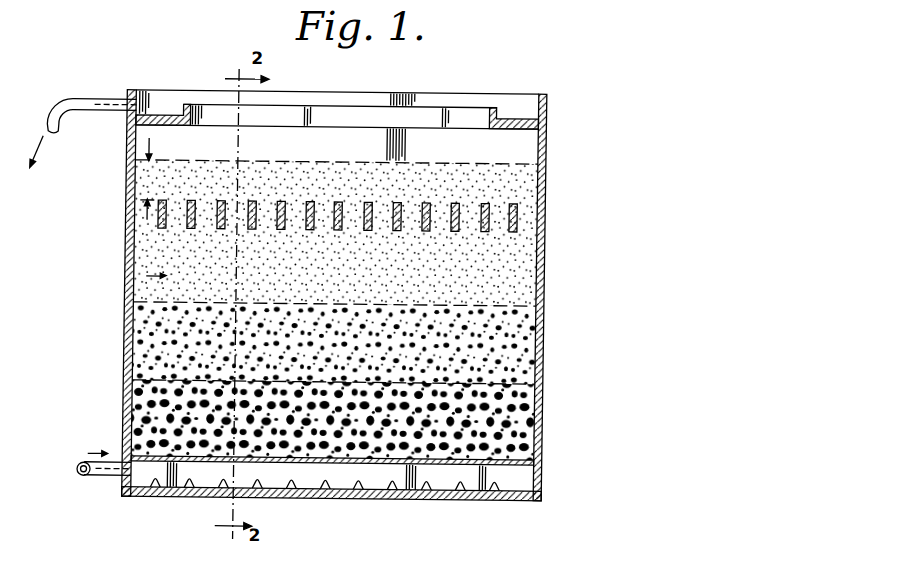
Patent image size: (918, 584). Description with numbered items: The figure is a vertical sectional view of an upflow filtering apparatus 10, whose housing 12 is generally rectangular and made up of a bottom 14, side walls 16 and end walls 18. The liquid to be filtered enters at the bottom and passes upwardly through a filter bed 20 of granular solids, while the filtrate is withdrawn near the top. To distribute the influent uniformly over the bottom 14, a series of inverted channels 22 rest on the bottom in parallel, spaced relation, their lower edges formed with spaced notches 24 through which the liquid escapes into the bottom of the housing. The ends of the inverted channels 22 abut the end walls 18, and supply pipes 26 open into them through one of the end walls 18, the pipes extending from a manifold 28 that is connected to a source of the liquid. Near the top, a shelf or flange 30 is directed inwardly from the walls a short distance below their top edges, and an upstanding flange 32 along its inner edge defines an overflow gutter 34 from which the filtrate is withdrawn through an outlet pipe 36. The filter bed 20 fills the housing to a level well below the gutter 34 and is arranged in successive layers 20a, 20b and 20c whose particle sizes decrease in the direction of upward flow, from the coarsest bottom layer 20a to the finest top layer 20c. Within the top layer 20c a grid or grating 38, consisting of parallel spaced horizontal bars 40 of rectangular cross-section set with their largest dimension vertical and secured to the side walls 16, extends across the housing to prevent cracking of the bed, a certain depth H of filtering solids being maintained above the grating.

The filtering apparatus 10 is at (551, 84).
The housing 12 is at (555, 192).
The bottom 14 is at (348, 491).
The side walls 16 is at (368, 93).
The end walls 18 is at (545, 219).
The filter bed 20 is at (130, 283).
The bottom layer 20a is at (122, 385).
The intermediate layer 20b is at (122, 305).
The top layer 20c is at (122, 162).
The inverted channels 22 is at (448, 482).
The notches 24 is at (190, 489).
The supply pipes 26 is at (107, 475).
The manifold 28 is at (82, 478).
The shelf or flange 30 is at (172, 126).
The upstanding flange 32 is at (203, 127).
The overflow or gutter 34 is at (163, 102).
The outlet pipe 36 is at (82, 99).
The grid or grating 38 is at (465, 205).
The bars 40 is at (360, 197).
The depth H is at (147, 178).